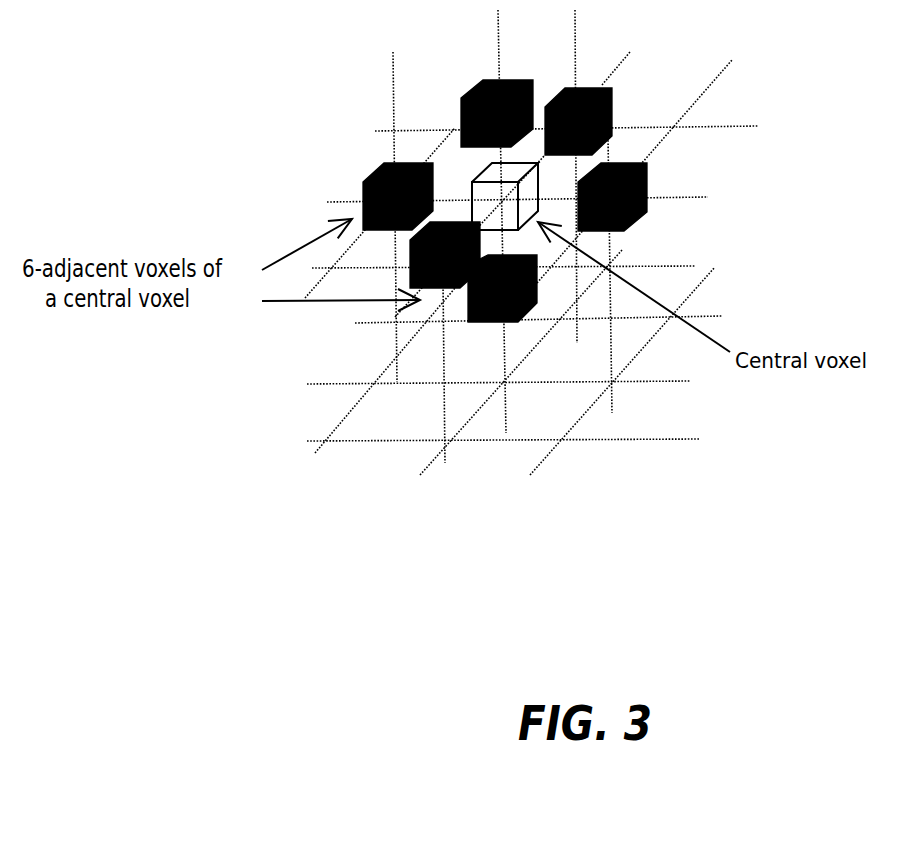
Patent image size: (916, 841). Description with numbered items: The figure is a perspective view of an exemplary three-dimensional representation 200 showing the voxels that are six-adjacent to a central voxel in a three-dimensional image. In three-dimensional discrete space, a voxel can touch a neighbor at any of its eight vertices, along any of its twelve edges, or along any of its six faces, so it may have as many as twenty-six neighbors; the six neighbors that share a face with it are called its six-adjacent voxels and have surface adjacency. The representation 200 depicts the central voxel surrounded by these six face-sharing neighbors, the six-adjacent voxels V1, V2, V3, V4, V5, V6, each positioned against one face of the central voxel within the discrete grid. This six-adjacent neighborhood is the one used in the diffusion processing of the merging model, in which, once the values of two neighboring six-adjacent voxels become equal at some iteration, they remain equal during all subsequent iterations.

The 3-D representation 200 is at (908, 128).
The 6-adjacent voxel V1 is at (363, 197).
The 6-adjacent voxel V2 is at (478, 86).
The 6-adjacent voxel V3 is at (648, 195).
The 6-adjacent voxel V4 is at (520, 322).
The 6-adjacent voxel V5 is at (412, 280).
The 6-adjacent voxel V6 is at (597, 88).